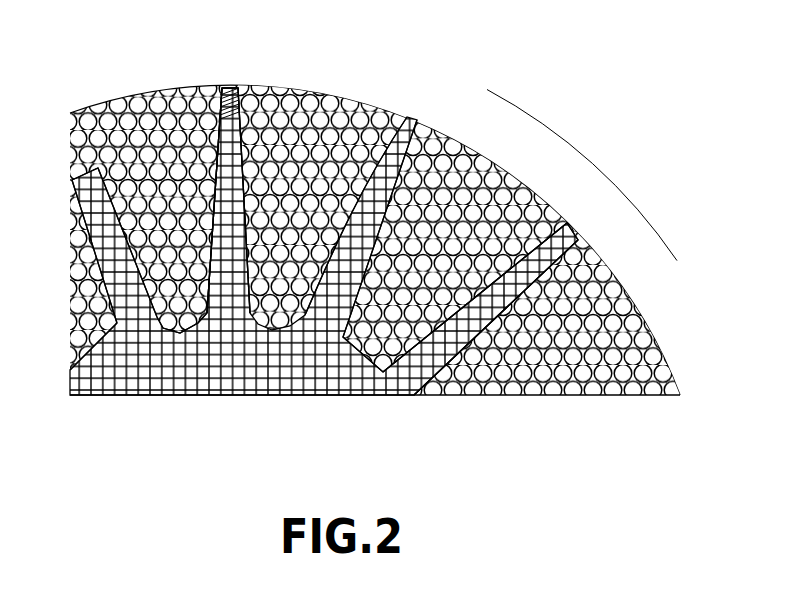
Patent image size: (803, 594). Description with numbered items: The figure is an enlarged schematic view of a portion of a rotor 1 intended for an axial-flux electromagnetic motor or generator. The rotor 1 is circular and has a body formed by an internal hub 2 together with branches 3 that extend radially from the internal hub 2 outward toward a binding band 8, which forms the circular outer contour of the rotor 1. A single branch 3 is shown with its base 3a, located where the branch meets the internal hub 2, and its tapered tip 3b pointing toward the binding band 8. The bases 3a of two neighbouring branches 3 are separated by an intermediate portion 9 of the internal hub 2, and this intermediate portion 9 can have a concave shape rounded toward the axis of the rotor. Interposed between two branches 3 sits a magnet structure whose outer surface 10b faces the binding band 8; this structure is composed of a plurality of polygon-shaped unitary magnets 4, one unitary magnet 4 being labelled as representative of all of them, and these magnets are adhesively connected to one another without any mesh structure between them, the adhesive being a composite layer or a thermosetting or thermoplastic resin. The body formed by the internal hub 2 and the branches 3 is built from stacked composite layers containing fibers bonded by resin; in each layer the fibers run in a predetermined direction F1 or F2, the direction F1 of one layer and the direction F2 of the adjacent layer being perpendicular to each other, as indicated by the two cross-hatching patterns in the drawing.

The rotor 1 is at (135, 402).
The internal hub 2 is at (300, 365).
The branch 3 is at (235, 230).
The base 3a is at (226, 317).
The tapered tip 3b is at (225, 92).
The unitary magnet 4 is at (552, 393).
The binding band 8 is at (567, 190).
The intermediate portion 9 is at (180, 325).
The outer surface 10b is at (160, 90).
The fiber orientation F1 is at (375, 393).
The fiber orientation F2 is at (410, 377).